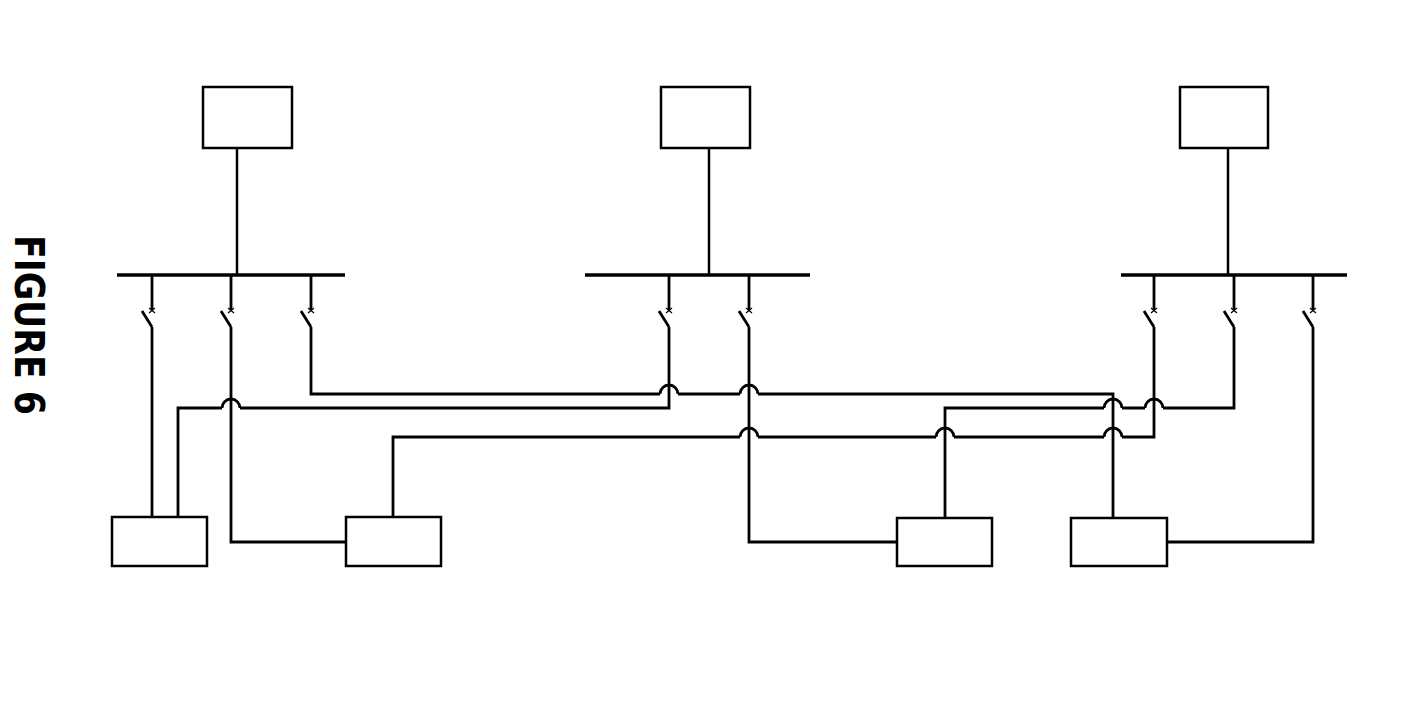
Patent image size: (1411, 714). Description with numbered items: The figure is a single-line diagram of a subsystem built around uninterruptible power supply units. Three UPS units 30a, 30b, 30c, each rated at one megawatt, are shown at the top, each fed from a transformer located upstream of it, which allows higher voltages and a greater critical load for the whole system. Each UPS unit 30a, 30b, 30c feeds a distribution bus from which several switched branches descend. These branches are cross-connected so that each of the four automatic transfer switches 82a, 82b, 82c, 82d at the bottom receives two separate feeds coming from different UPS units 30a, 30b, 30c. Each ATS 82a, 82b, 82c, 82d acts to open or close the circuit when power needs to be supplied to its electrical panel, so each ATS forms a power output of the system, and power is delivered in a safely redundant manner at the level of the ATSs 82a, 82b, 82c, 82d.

The UPS unit 30a is at (292, 107).
The UPS unit 30b is at (750, 120).
The UPS unit 30c is at (1268, 105).
The ATS 82a is at (169, 566).
The ATS 82b is at (386, 570).
The ATS 82c is at (923, 566).
The ATS 82d is at (1115, 566).